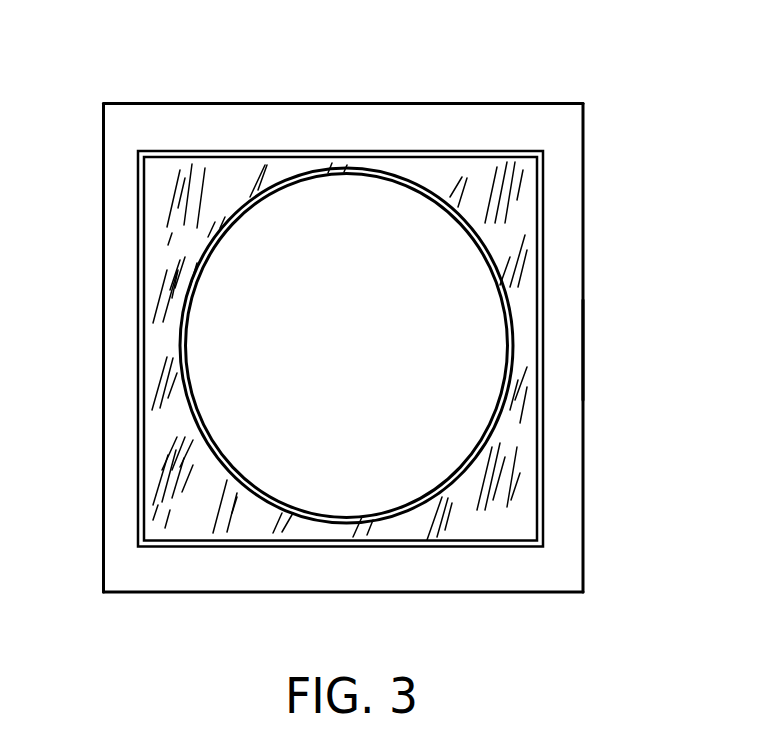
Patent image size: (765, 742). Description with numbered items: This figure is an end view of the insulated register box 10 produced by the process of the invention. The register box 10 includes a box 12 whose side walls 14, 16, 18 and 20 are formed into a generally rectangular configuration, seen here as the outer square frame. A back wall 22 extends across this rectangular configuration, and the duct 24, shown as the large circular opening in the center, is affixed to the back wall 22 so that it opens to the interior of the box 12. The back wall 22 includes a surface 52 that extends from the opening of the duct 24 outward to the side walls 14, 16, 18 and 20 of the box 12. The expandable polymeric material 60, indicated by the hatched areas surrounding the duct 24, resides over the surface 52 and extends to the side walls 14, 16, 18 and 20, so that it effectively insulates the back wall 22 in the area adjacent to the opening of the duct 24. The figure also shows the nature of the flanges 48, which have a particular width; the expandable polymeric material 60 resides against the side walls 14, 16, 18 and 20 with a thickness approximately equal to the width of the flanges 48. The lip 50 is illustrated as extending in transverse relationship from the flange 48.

The insulated register box 10 is at (638, 82).
The box 12 is at (583, 170).
The side wall 14 is at (583, 415).
The side wall 16 is at (407, 593).
The side wall 18 is at (103, 345).
The side wall 20 is at (497, 103).
The back wall 22 is at (157, 448).
The duct 24 is at (222, 236).
The flanges 48 is at (583, 345).
The lip 50 is at (157, 262).
The surface 52 is at (188, 522).
The expandable polymeric material 60 is at (510, 485).